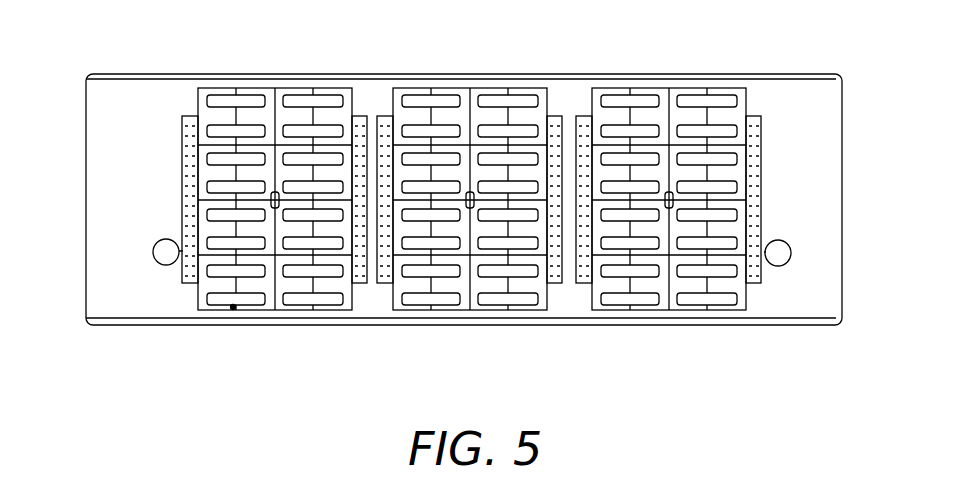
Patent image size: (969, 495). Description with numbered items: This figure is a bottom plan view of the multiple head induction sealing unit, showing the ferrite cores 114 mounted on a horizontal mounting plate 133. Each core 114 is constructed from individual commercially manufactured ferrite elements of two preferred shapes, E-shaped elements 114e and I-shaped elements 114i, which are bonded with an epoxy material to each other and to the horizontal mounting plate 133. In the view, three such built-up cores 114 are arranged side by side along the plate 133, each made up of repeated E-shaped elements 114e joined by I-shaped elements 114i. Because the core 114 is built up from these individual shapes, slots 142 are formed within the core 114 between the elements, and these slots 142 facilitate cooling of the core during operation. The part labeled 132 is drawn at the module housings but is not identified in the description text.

The core 114 is at (197, 169).
The E-shaped element 114e is at (239, 90).
The I-shaped element 114i is at (470, 192).
The module housing 132 is at (744, 96).
The horizontal mounting plate 133 is at (828, 328).
The slot 142 is at (233, 309).